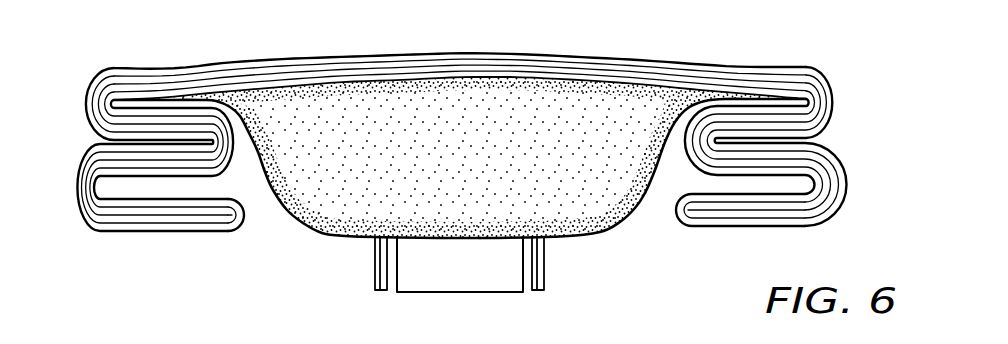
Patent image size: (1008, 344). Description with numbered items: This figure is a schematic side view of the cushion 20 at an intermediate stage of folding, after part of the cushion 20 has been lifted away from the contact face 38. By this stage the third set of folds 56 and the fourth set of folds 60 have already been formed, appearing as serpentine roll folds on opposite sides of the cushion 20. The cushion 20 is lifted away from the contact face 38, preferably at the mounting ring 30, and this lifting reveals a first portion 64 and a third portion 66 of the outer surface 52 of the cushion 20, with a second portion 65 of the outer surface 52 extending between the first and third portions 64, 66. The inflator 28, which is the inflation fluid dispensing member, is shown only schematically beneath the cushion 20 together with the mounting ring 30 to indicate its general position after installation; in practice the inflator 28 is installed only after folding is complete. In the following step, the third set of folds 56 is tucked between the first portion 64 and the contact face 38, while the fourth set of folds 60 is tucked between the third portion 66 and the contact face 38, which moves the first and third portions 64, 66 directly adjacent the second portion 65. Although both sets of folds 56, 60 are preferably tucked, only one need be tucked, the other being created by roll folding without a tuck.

The contact face 38 is at (453, 57).
The fourth set of folds 60 is at (88, 137).
The third set of folds 56 is at (839, 131).
The cushion 20 is at (790, 218).
The third portion 66 is at (283, 212).
The outer surface 52 is at (338, 236).
The second portion 65 is at (577, 238).
The first portion 64 is at (631, 212).
The inflator 28 is at (460, 275).
The mounting ring 30 is at (540, 257).